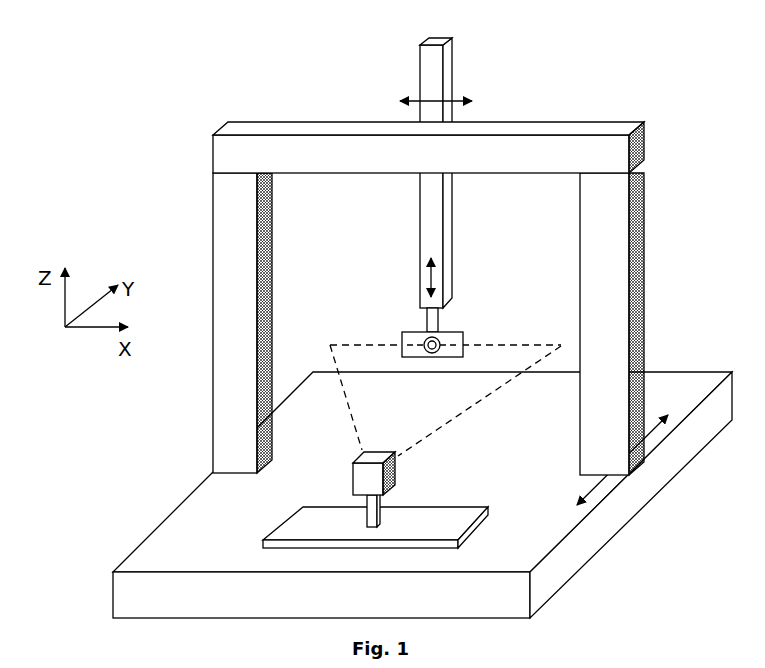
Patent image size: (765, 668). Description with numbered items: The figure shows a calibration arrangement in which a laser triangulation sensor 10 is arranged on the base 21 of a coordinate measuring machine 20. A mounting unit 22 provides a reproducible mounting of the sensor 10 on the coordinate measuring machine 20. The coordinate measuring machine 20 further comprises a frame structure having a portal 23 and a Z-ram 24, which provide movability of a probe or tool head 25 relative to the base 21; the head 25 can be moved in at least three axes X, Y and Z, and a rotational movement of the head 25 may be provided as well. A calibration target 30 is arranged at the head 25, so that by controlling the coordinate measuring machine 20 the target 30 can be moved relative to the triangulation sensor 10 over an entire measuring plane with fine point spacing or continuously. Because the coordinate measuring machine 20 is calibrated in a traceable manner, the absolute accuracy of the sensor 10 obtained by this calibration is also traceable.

The laser triangulation sensor 10 is at (363, 481).
The coordinate measuring machine 20 is at (195, 44).
The base 21 is at (403, 495).
The mounting unit 22 is at (465, 499).
The portal 23 is at (389, 298).
The Z-ram 24 is at (470, 173).
The probe or tool head 25 is at (488, 304).
The calibration target 30 is at (390, 317).